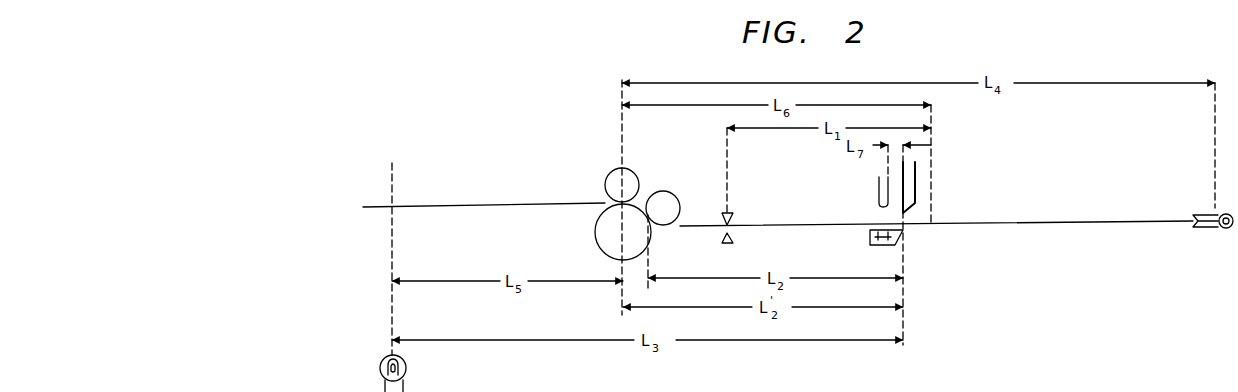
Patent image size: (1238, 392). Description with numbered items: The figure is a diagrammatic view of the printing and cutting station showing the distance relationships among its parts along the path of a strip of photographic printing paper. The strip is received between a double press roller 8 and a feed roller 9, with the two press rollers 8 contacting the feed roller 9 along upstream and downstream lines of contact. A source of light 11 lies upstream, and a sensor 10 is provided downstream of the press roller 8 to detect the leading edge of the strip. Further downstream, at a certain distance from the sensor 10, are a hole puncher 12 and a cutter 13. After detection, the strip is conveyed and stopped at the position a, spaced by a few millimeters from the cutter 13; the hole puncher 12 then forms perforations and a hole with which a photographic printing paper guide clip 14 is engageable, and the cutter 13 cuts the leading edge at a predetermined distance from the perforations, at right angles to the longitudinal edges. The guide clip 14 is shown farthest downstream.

The double press roller 8 is at (665, 193).
The feed roller 9 is at (599, 224).
The sensor 10 is at (734, 240).
The source of light 11 is at (407, 368).
The hole puncher 12 is at (877, 203).
The cutter 13 is at (908, 212).
The stop position a is at (933, 224).
The photographic printing paper guide clip 14 is at (1205, 228).